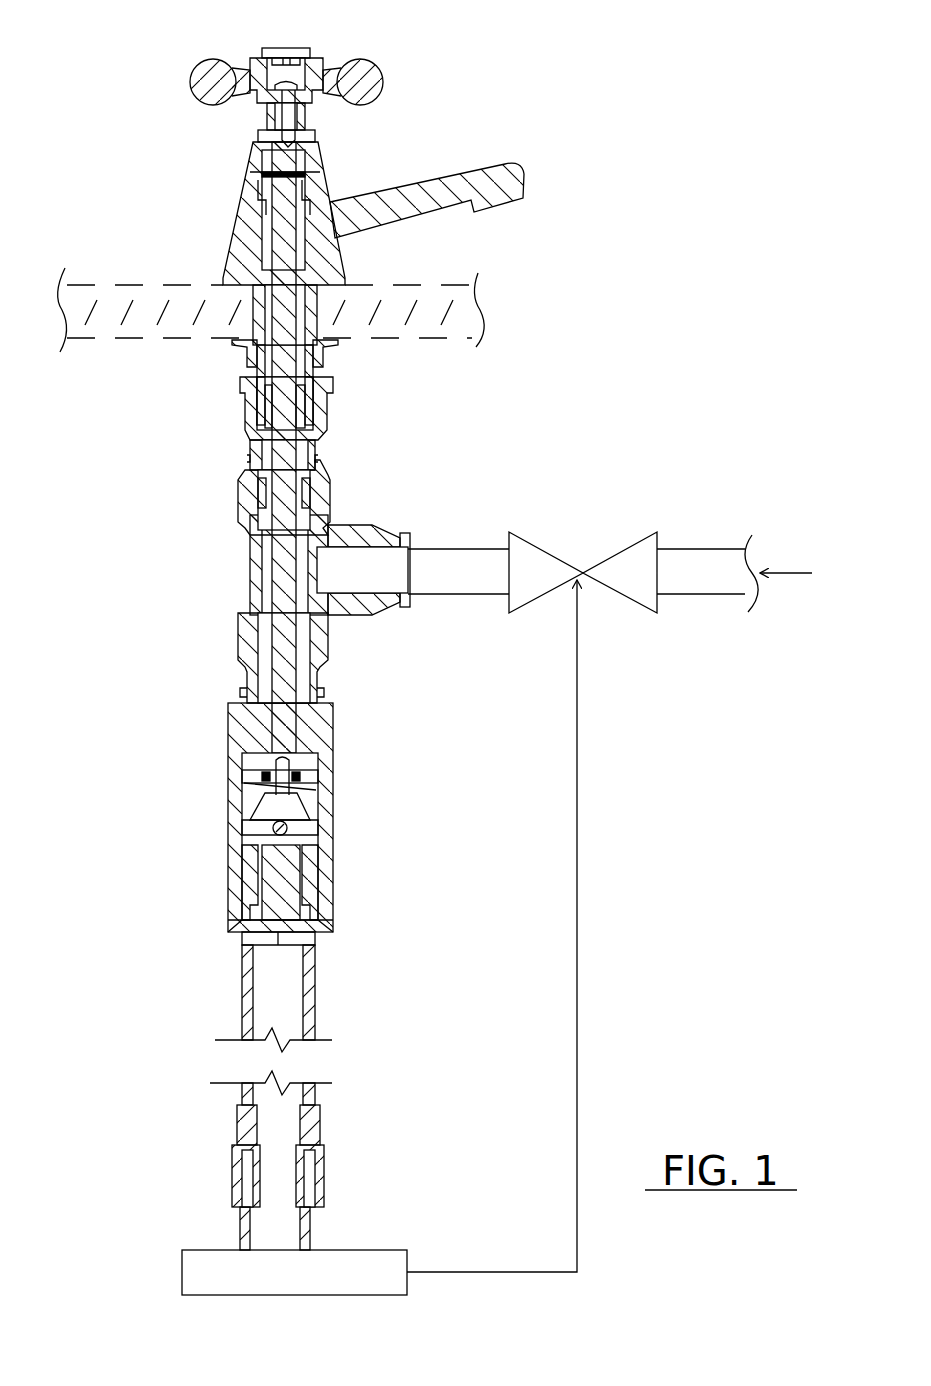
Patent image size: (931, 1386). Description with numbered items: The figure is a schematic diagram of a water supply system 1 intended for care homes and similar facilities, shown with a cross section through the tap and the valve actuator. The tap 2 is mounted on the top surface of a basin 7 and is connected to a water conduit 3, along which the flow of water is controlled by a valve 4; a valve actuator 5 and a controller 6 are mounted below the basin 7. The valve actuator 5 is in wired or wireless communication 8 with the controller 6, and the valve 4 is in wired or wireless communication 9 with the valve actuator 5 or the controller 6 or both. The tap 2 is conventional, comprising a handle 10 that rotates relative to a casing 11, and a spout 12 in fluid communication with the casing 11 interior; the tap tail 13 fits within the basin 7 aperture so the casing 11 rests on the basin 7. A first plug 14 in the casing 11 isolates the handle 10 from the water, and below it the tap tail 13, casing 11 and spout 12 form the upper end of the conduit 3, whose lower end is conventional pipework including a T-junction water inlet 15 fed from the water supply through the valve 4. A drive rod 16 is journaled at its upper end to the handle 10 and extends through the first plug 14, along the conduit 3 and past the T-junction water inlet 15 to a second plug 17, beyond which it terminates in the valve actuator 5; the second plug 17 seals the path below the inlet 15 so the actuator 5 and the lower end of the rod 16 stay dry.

The water supply system 1 is at (534, 50).
The tap 2 is at (145, 127).
The water conduit 3 is at (300, 373).
The valve 4 is at (581, 550).
The valve actuator 5 is at (350, 773).
The controller 6 is at (287, 1287).
The basin 7 is at (453, 304).
The wired or wireless communication 8 is at (243, 988).
The wired or wireless communication 9 is at (580, 893).
The handle 10 is at (380, 62).
The casing 11 is at (243, 250).
The spout 12 is at (506, 160).
The tap tail 13 is at (258, 356).
The first plug 14 is at (262, 195).
The T-junction water inlet 15 is at (243, 507).
The drive rod 16 is at (290, 408).
The second plug 17 is at (258, 650).